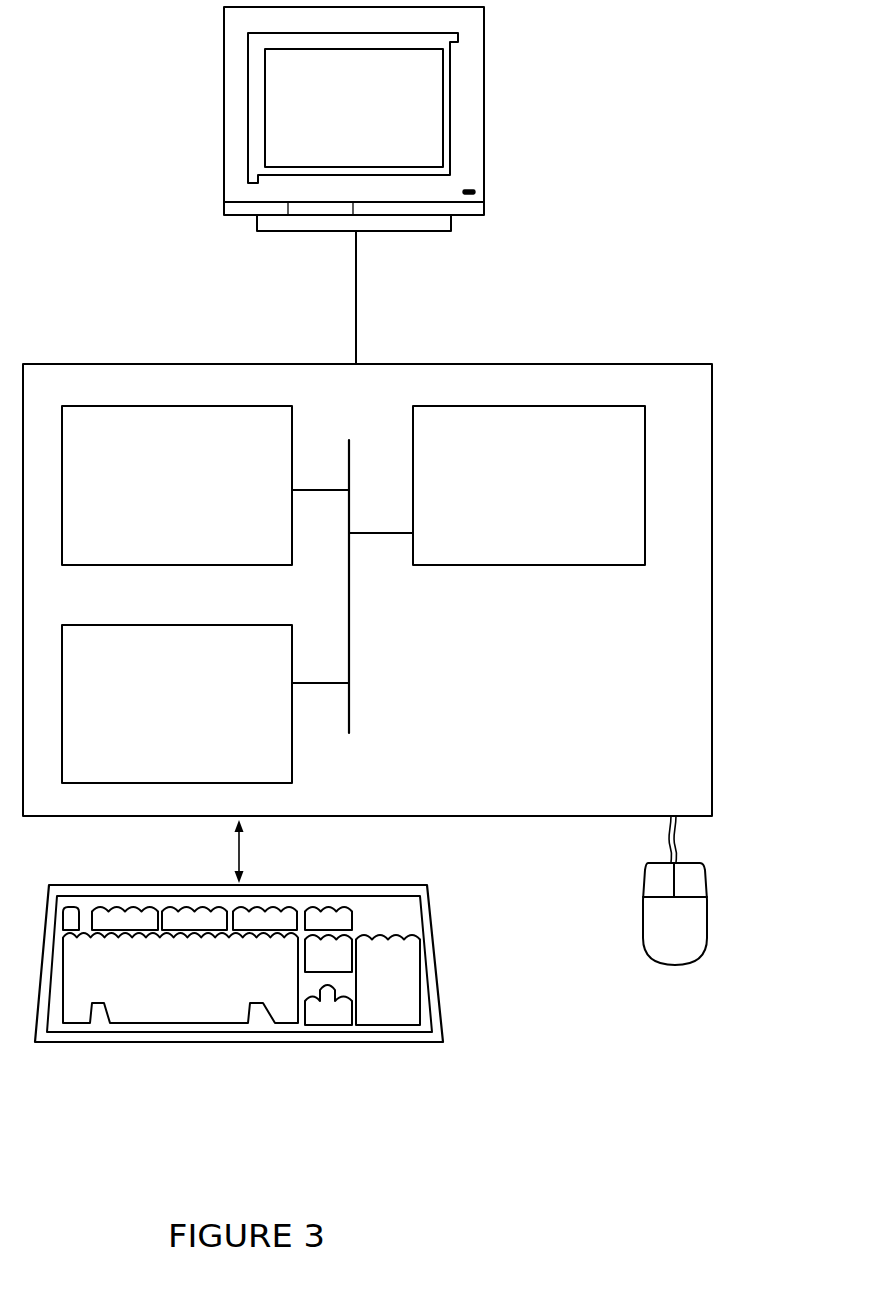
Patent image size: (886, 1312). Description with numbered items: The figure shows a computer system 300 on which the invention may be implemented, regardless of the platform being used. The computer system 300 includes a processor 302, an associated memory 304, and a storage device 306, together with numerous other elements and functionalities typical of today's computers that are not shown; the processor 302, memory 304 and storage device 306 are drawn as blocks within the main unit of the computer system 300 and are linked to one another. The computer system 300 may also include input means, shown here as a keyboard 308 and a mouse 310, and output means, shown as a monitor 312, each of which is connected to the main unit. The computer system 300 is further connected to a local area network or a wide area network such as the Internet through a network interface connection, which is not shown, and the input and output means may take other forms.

The computer system 300 is at (755, 133).
The processor 302 is at (537, 497).
The memory 304 is at (199, 497).
The storage device 306 is at (195, 717).
The keyboard 308 is at (195, 991).
The mouse 310 is at (696, 936).
The monitor 312 is at (371, 125).